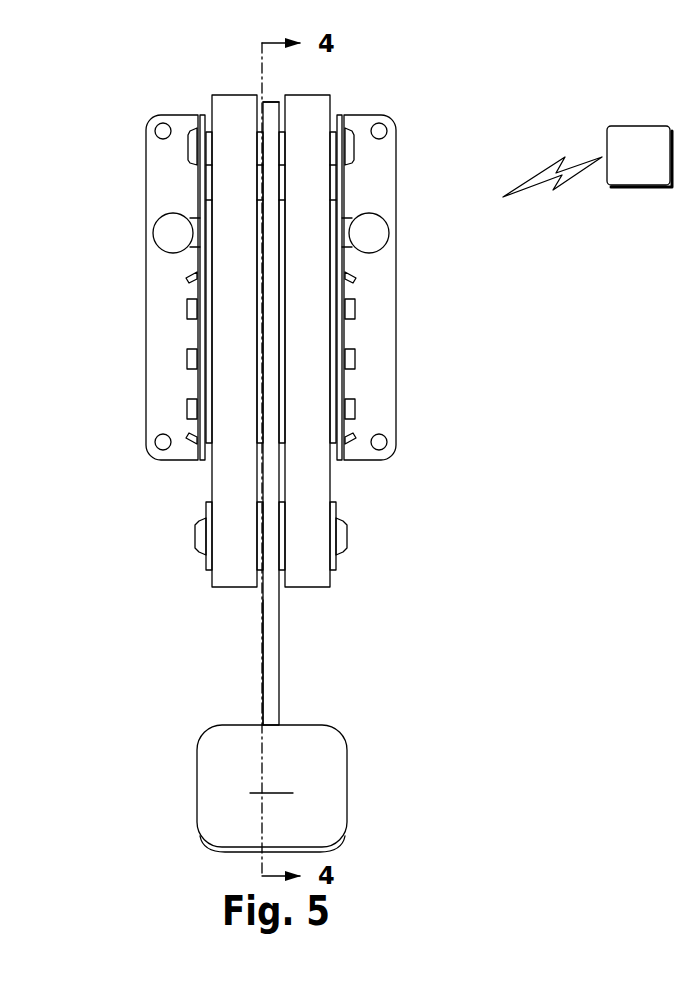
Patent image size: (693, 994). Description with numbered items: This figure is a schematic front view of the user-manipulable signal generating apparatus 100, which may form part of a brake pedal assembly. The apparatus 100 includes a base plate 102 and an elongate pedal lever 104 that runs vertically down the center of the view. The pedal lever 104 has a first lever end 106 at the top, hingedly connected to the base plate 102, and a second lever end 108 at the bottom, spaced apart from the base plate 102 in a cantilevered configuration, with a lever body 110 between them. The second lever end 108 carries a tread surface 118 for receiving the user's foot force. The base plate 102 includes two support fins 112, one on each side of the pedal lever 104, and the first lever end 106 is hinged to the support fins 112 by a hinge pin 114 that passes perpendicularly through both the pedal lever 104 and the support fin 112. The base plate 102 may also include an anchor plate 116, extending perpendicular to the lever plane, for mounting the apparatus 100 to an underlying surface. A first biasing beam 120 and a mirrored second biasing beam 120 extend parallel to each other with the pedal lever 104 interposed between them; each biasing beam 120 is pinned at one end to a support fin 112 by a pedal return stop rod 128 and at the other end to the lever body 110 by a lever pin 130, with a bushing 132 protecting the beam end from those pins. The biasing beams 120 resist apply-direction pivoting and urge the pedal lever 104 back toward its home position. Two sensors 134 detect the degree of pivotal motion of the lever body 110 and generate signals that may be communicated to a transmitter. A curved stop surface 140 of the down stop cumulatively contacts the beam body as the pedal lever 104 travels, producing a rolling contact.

The user-manipulable signal generating apparatus 100 is at (477, 120).
The base plate 102 is at (398, 350).
The elongate pedal lever 104 is at (313, 632).
The first lever end 106 is at (258, 85).
The second lever end 108 is at (353, 781).
The lever body 110 is at (255, 633).
The support fin 112 is at (190, 122).
The hinge pin 114 is at (348, 197).
The anchor plate 116 is at (363, 318).
The tread surface 118 is at (271, 779).
The biasing beam 120 is at (203, 473).
The pedal return stop rod 128 is at (357, 150).
The lever pin 130 is at (348, 532).
The bushing 132 is at (337, 563).
The sensor 134 is at (156, 220).
The curved stop surface 140 is at (190, 280).